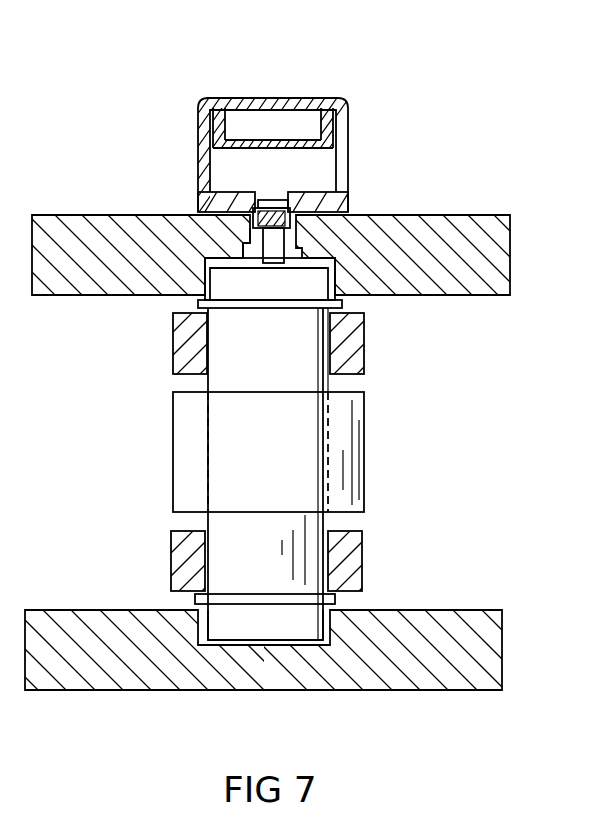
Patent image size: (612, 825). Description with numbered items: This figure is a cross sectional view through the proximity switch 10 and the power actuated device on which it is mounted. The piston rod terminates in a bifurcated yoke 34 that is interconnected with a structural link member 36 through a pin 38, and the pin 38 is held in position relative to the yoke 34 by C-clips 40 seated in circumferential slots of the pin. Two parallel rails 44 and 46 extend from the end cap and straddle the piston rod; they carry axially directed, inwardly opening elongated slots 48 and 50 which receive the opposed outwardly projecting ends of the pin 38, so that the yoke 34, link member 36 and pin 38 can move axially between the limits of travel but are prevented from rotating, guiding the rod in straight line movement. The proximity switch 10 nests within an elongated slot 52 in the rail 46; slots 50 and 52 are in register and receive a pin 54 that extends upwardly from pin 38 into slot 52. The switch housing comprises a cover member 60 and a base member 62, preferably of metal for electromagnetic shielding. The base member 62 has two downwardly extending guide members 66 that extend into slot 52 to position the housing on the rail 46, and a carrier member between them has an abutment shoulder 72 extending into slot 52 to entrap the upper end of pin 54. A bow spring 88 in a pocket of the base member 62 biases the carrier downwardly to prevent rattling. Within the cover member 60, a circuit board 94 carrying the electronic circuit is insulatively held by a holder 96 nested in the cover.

The proximity switch 10 is at (296, 50).
The bifurcated yoke 34 is at (182, 344).
The structural link member 36 is at (182, 447).
The pin 38 is at (281, 357).
The C-clips 40 is at (195, 600).
The rail 44 is at (497, 662).
The rail 46 is at (498, 266).
The elongated slot 48 is at (302, 646).
The elongated slot 50 is at (330, 250).
The elongated slot 52 is at (243, 250).
The pin 54 is at (278, 250).
The cover member 60 is at (347, 148).
The base member 62 is at (203, 204).
The guide members 66 is at (248, 240).
The abutment shoulder 72 is at (235, 250).
The bow spring 88 is at (280, 206).
The circuit board 94 is at (290, 140).
The holder 96 is at (244, 112).